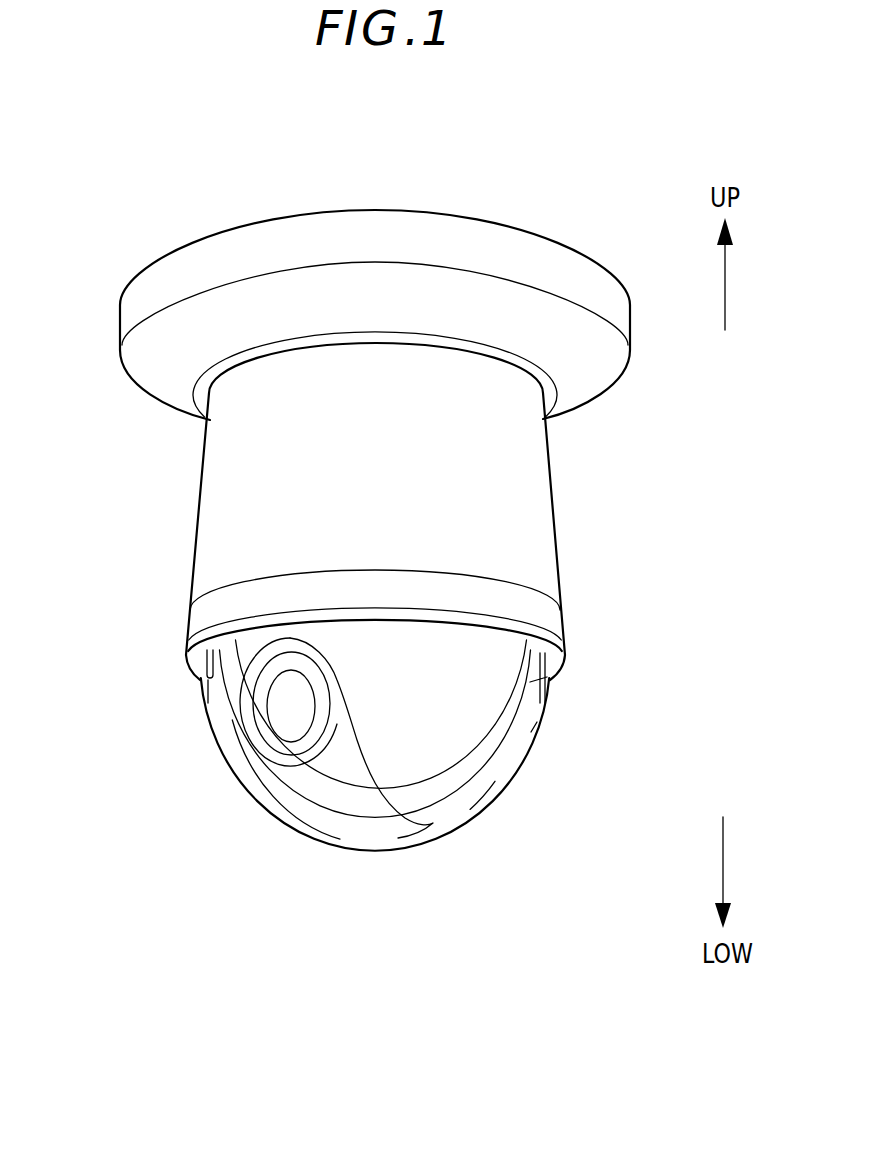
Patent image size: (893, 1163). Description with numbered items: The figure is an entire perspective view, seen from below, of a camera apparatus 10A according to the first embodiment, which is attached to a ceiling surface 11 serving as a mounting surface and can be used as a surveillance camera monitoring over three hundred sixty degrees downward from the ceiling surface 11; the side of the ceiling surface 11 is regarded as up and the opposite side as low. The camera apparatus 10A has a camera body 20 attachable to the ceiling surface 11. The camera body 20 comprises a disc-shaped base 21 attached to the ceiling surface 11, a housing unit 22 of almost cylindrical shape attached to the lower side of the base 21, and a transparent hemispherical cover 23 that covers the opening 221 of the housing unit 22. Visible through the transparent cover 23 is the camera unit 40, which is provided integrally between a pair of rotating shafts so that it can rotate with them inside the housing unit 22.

The camera apparatus 10A is at (120, 772).
The ceiling surface 11 is at (93, 297).
The camera body 20 is at (610, 498).
The disc-shaped base 21 is at (608, 380).
The housing unit 22 is at (560, 582).
The opening 221 is at (206, 682).
The transparent hemispherical cover 23 is at (545, 722).
The camera unit 40 is at (267, 728).